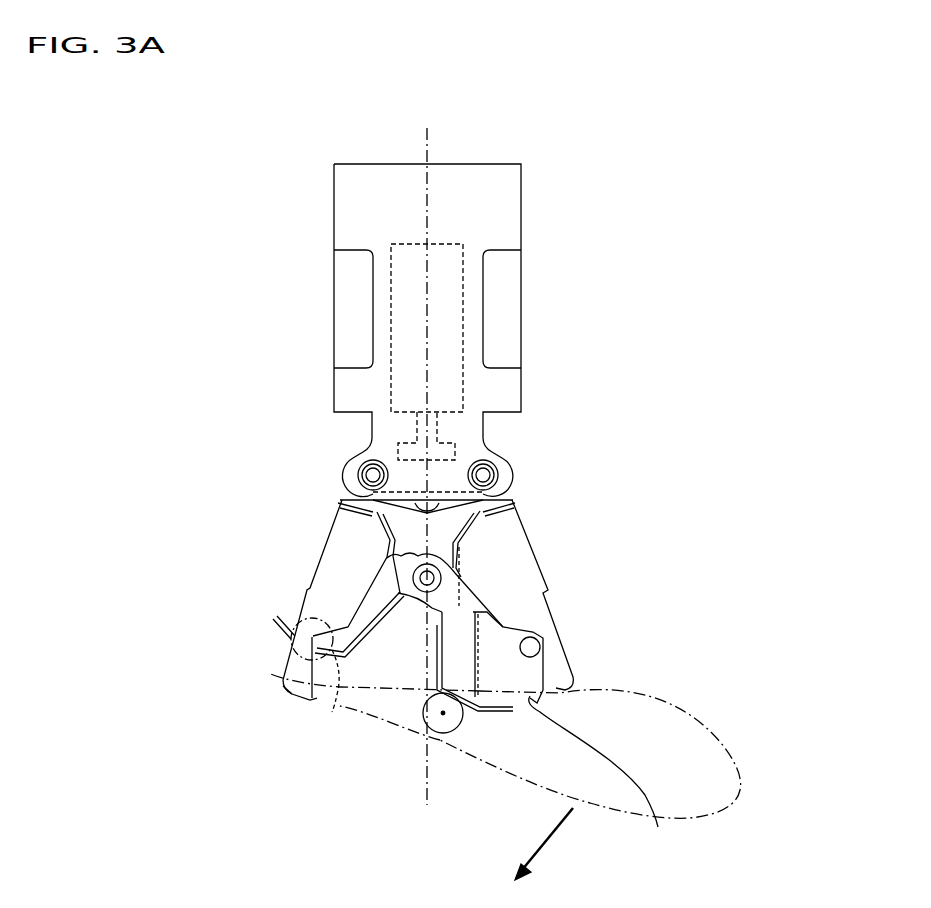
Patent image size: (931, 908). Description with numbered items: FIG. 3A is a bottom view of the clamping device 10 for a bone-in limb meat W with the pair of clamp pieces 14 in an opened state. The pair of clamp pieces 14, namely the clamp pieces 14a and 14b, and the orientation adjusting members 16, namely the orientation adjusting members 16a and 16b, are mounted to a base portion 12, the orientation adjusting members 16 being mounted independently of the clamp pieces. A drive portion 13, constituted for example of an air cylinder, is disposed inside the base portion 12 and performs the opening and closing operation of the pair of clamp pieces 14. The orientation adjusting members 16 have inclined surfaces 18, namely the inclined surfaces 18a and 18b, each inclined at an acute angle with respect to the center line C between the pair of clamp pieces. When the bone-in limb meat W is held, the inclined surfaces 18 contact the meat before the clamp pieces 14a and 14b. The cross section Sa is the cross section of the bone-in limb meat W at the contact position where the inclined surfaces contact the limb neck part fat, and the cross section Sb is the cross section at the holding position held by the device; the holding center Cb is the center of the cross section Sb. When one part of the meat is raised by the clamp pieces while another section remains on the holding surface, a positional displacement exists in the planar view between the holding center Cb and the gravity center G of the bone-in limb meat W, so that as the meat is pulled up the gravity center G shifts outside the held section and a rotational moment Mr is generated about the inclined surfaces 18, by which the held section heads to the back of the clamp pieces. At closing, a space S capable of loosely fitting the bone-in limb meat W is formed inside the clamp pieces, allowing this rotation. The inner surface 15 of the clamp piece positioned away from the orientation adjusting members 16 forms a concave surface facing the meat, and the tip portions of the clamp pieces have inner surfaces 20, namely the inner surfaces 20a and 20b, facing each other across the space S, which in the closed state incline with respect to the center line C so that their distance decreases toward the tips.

The clamping device 10 is at (334, 213).
The base portion 12 is at (334, 308).
The drive portion 13 is at (392, 381).
The pair of clamp pieces 14 is at (436, 572).
The clamp piece 14a is at (515, 553).
The clamp piece 14b is at (352, 535).
The inner surface 15 is at (308, 622).
The orientation adjusting members 16 is at (436, 627).
The orientation adjusting member 16a is at (478, 655).
The orientation adjusting member 16b is at (370, 602).
The inclined surfaces 18 is at (353, 731).
The inclined surface 18a is at (447, 748).
The inclined surface 18b is at (330, 710).
The inner surfaces of tip portions 20 is at (438, 733).
The inner surface 20a is at (605, 773).
The inner surface 20b is at (318, 678).
The space S is at (418, 648).
The cross section at contact position Sa is at (468, 720).
The cross section at holding position Sb is at (425, 712).
The holding center Cb is at (443, 715).
The center line C is at (427, 788).
The gravity center G is at (545, 738).
The rotational moment Mr is at (556, 840).
The bone-in limb meat W is at (716, 815).